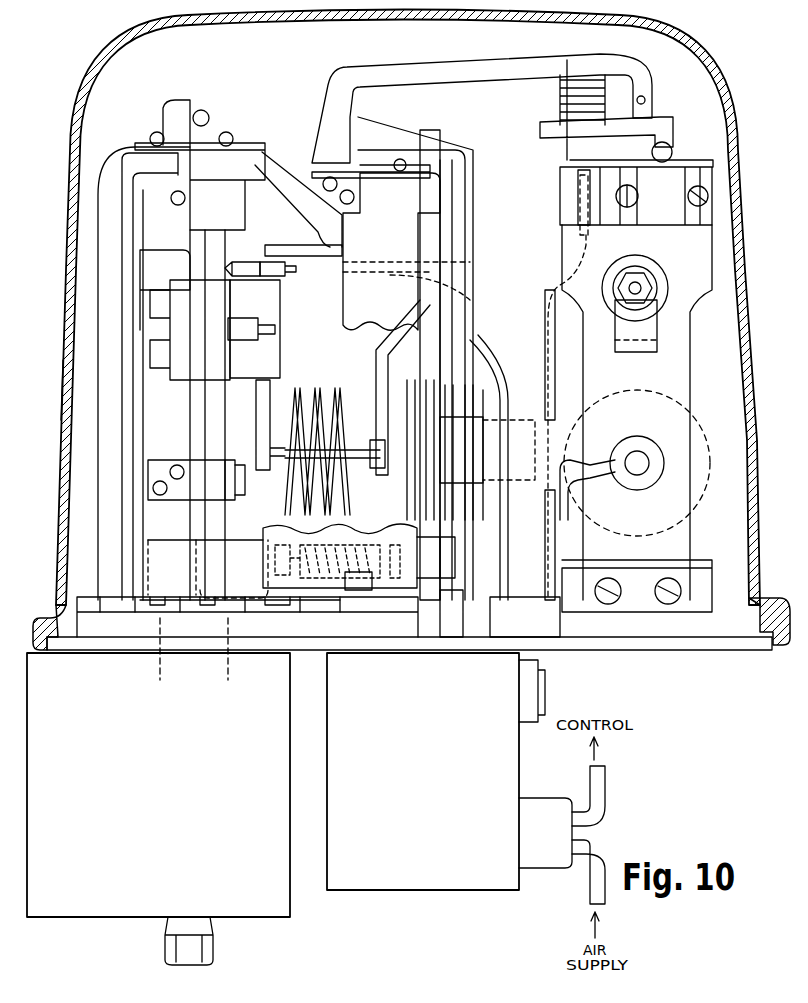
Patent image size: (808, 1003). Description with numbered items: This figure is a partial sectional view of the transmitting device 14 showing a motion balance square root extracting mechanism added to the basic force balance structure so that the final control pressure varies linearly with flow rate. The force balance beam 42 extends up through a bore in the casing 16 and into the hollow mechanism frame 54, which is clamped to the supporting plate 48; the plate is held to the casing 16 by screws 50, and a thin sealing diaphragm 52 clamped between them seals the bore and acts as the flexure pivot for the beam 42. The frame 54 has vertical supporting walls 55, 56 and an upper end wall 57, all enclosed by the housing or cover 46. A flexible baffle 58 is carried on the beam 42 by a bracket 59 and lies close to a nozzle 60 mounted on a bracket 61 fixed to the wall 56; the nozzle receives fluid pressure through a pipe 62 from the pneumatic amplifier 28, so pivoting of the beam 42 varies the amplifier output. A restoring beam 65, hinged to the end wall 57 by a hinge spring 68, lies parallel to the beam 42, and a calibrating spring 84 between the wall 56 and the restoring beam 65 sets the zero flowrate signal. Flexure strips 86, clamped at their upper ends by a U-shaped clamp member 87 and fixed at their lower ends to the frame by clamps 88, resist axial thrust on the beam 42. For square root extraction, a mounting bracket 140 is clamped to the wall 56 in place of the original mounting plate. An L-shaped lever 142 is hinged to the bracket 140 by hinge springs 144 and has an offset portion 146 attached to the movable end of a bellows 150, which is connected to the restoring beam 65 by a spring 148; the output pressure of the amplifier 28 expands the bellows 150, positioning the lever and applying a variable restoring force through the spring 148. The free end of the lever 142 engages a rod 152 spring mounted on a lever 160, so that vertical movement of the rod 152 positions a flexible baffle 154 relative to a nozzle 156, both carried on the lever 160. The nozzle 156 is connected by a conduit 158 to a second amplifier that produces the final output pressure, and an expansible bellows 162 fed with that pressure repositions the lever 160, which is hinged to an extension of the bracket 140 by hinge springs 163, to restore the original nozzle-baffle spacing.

The transmitting device 14 is at (80, 54).
The casing 16 is at (70, 930).
The pneumatic amplifier 28 is at (430, 767).
The force balance beam 42 is at (152, 250).
The housing or cover 46 is at (60, 385).
The supporting plate 48 is at (105, 648).
The screws 50 is at (285, 603).
The sealing diaphragm 52 is at (240, 650).
The mechanism frame 54 is at (97, 185).
The vertical supporting wall 55 is at (98, 308).
The vertical supporting wall 56 is at (398, 251).
The upper end wall 57 is at (290, 165).
The flexible baffle 58 is at (230, 362).
The bracket 59 is at (182, 500).
The nozzle 60 is at (238, 278).
The bracket 61 is at (290, 248).
The pipe 62 is at (300, 278).
The restoring beam 65 is at (258, 415).
The hinge spring 68 is at (210, 150).
The calibrating spring 84 is at (360, 530).
The flexure strips 86 is at (188, 432).
The U-shaped clamp member 87 is at (285, 340).
The clamps 88 is at (180, 597).
The mounting bracket 140 is at (440, 365).
The L-shaped lever 142 is at (478, 240).
The hinge springs 144 is at (382, 180).
The offset portion 146 is at (378, 342).
The spring 148 is at (335, 385).
The bellows 150 is at (460, 382).
The rod 152 is at (680, 160).
The flexible baffle 154 is at (578, 170).
The nozzle 156 is at (578, 200).
The conduit 158 is at (545, 345).
The lever 160 is at (695, 340).
The expansible bellows 162 is at (700, 420).
The hinge springs 163 is at (712, 568).